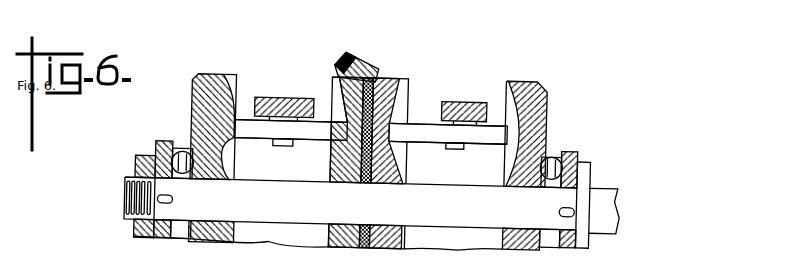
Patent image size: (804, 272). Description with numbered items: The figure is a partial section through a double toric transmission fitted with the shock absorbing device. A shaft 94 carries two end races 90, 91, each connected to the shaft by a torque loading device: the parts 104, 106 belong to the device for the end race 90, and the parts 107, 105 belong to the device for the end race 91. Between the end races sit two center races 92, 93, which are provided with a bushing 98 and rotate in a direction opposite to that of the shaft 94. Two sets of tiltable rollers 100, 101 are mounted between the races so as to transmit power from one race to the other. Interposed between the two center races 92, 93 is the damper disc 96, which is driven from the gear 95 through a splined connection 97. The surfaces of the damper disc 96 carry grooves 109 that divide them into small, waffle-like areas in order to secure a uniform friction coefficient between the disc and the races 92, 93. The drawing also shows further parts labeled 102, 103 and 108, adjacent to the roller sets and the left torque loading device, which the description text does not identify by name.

The end race 90 is at (212, 70).
The end race 91 is at (547, 113).
The center race 92 is at (330, 77).
The center race 93 is at (406, 71).
The shaft 94 is at (600, 187).
The gear 95 is at (355, 52).
The damper disc 96 is at (400, 71).
The splined connection 97 is at (369, 71).
The bushing 98 is at (344, 176).
The set of tiltable rollers 100 is at (254, 135).
The set of tiltable rollers 101 is at (422, 135).
The left magnet block 102 is at (262, 94).
The right magnet block 103 is at (443, 94).
The torque loading device 104 is at (182, 147).
The torque loading device 105 is at (552, 147).
The torque loading device 106 is at (163, 140).
The torque loading device 107 is at (572, 141).
The left end collar 108 is at (140, 155).
The grooves 109 is at (347, 142).